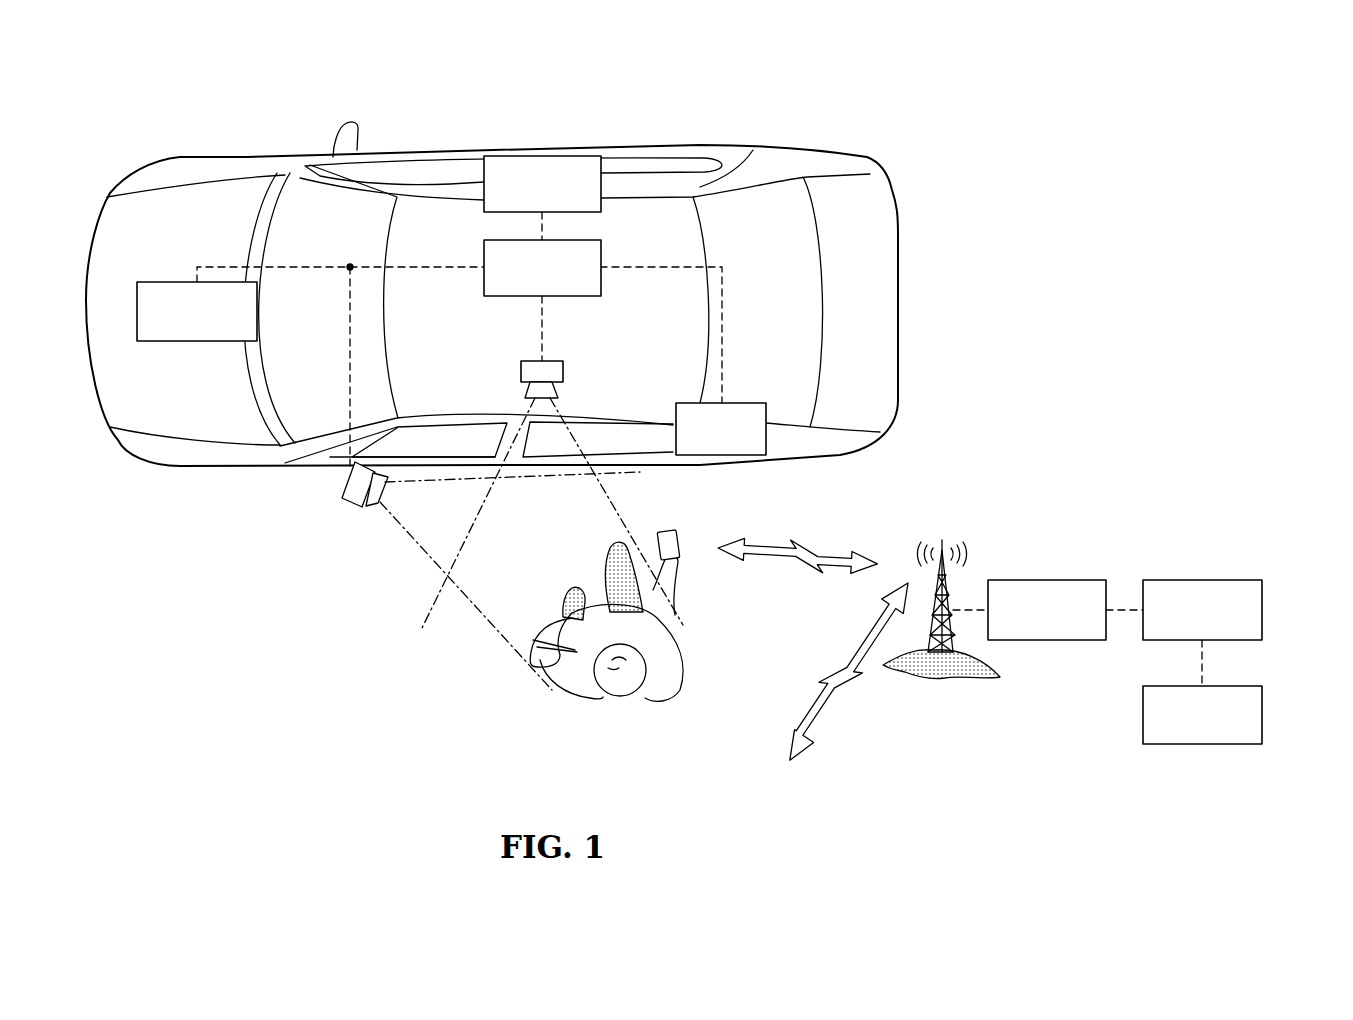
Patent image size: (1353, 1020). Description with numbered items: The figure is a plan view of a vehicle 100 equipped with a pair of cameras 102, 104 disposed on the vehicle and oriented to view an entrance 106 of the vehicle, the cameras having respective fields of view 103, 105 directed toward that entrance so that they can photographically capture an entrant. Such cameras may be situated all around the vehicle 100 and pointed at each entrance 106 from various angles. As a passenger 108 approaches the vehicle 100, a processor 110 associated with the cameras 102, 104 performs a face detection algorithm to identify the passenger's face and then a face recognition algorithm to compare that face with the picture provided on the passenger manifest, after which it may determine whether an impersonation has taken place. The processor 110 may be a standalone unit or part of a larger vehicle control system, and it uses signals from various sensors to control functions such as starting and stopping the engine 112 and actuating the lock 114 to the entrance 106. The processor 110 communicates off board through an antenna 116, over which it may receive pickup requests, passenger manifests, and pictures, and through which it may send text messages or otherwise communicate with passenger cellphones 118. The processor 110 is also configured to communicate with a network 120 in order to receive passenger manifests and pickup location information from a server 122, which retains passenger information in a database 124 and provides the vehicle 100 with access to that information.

The vehicle 100 is at (247, 157).
The camera 102 is at (552, 361).
The field of view 103 is at (460, 545).
The camera 104 is at (352, 507).
The field of view 105 is at (402, 530).
The entrance 106 is at (438, 156).
The passenger 108 is at (655, 682).
The processor 110 is at (602, 257).
The engine 112 is at (173, 282).
The lock 114 is at (740, 402).
The antenna 116 is at (603, 171).
The passenger cellphone 118 is at (680, 548).
The network 120 is at (1048, 580).
The server 122 is at (1263, 610).
The database 124 is at (1263, 717).